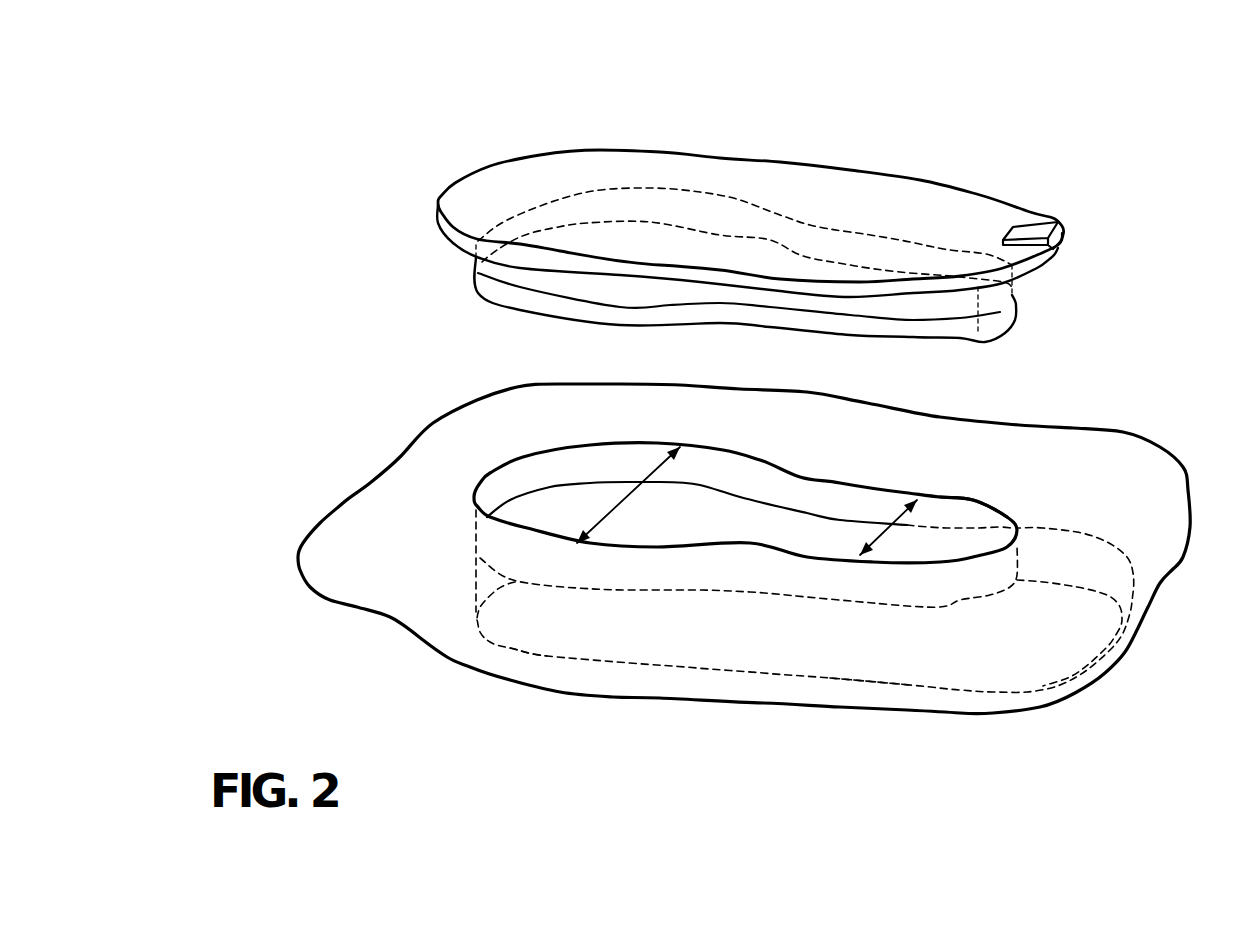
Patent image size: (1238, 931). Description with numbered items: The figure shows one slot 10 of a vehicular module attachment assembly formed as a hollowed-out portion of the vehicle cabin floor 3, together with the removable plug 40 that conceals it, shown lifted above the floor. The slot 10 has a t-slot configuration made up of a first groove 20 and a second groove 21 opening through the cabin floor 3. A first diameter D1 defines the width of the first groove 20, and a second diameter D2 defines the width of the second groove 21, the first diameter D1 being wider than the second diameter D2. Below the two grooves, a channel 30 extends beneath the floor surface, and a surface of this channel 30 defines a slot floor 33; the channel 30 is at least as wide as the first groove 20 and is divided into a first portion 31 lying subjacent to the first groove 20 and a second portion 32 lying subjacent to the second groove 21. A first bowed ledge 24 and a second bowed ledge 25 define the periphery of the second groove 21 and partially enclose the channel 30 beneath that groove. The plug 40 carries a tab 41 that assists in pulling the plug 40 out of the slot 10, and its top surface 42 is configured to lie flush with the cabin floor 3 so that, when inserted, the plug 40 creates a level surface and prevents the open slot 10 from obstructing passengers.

The slot 10 is at (1123, 268).
The removable plug 40 is at (820, 153).
The tab 41 is at (1028, 232).
The top surface 42 is at (705, 185).
The cabin floor 3 is at (1123, 483).
The first groove 20 is at (520, 453).
The second groove 21 is at (973, 490).
The first bowed ledge 24 is at (902, 492).
The second bowed ledge 25 is at (773, 557).
The channel 30 is at (643, 665).
The first portion 31 is at (570, 628).
The second portion 32 is at (925, 663).
The slot floor 33 is at (860, 673).
The first diameter D1 is at (607, 508).
The second diameter D2 is at (885, 524).